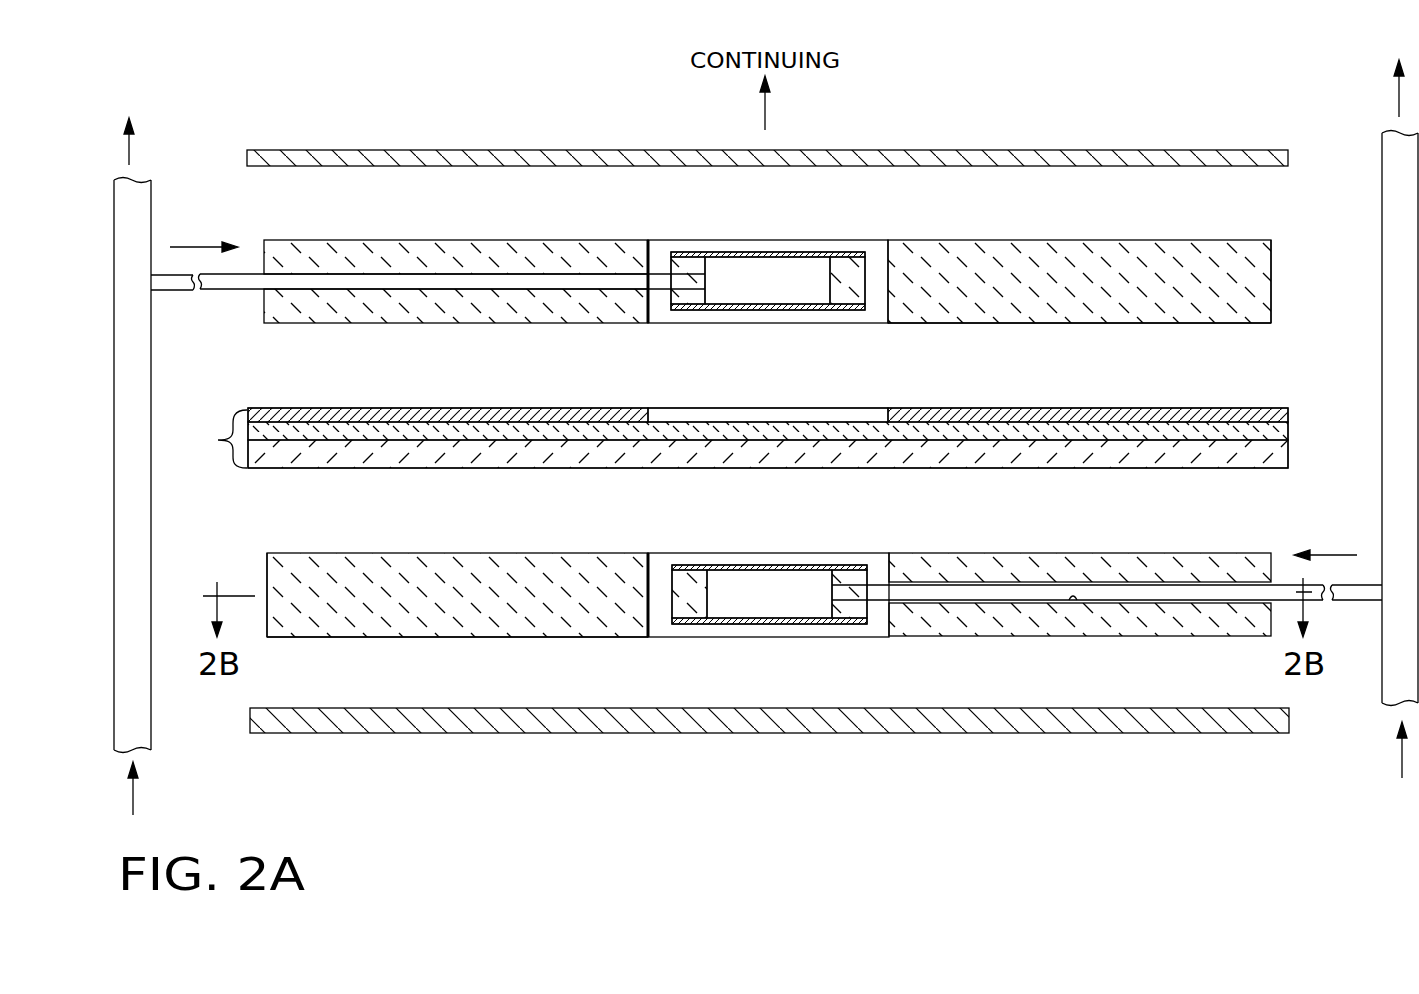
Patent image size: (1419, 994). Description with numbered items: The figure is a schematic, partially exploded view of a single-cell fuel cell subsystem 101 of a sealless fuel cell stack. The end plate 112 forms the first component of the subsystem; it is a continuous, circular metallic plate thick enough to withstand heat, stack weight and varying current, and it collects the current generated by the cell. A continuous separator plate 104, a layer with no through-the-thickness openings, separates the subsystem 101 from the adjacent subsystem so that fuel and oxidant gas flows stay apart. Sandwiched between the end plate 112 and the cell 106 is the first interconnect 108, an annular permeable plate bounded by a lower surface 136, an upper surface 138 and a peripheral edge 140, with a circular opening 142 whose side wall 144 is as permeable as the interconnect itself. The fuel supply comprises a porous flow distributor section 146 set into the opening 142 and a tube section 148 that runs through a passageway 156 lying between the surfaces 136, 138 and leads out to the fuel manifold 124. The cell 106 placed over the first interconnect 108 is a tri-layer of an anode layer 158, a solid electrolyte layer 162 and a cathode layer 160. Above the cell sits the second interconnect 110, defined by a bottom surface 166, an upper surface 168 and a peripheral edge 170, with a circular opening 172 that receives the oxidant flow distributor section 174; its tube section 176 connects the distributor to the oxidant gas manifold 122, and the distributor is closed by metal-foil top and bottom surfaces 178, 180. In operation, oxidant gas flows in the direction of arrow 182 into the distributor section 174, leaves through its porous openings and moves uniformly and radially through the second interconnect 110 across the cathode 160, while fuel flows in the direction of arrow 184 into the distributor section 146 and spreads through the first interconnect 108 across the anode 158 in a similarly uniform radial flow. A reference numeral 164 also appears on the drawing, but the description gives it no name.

The first fuel cell subsystem 101 is at (1262, 74).
The continuous separator plate 104 is at (1072, 150).
The cell 106 is at (217, 470).
The first interconnect 108 is at (459, 611).
The second interconnect 110 is at (1094, 294).
The end plate 112 is at (397, 735).
The oxidant gas manifold 122 is at (151, 182).
The fuel manifold 124 is at (1380, 340).
The lower surface 136 is at (930, 636).
The upper surface 138 is at (560, 553).
The peripheral edge 140 is at (267, 580).
The circular opening 142 is at (770, 540).
The side wall 144 is at (658, 622).
The flow distributor section 146 is at (770, 624).
The tube section 148 is at (1095, 578).
The passageway 156 is at (1080, 605).
The anode layer 158 is at (430, 468).
The cathode layer 160 is at (962, 408).
The solid electrolyte layer 162 is at (1290, 432).
The gap in top layer 164 is at (865, 396).
The bottom surface 166 is at (555, 322).
The upper surface 168 is at (955, 240).
The peripheral edge 170 is at (1268, 256).
The circular opening 172 is at (750, 228).
The flow distributor section 174 is at (720, 252).
The tube section 176 is at (462, 240).
The top surface 178 is at (830, 252).
The bottom surface 180 is at (770, 310).
The arrow 182 is at (195, 247).
The arrow 184 is at (1340, 555).